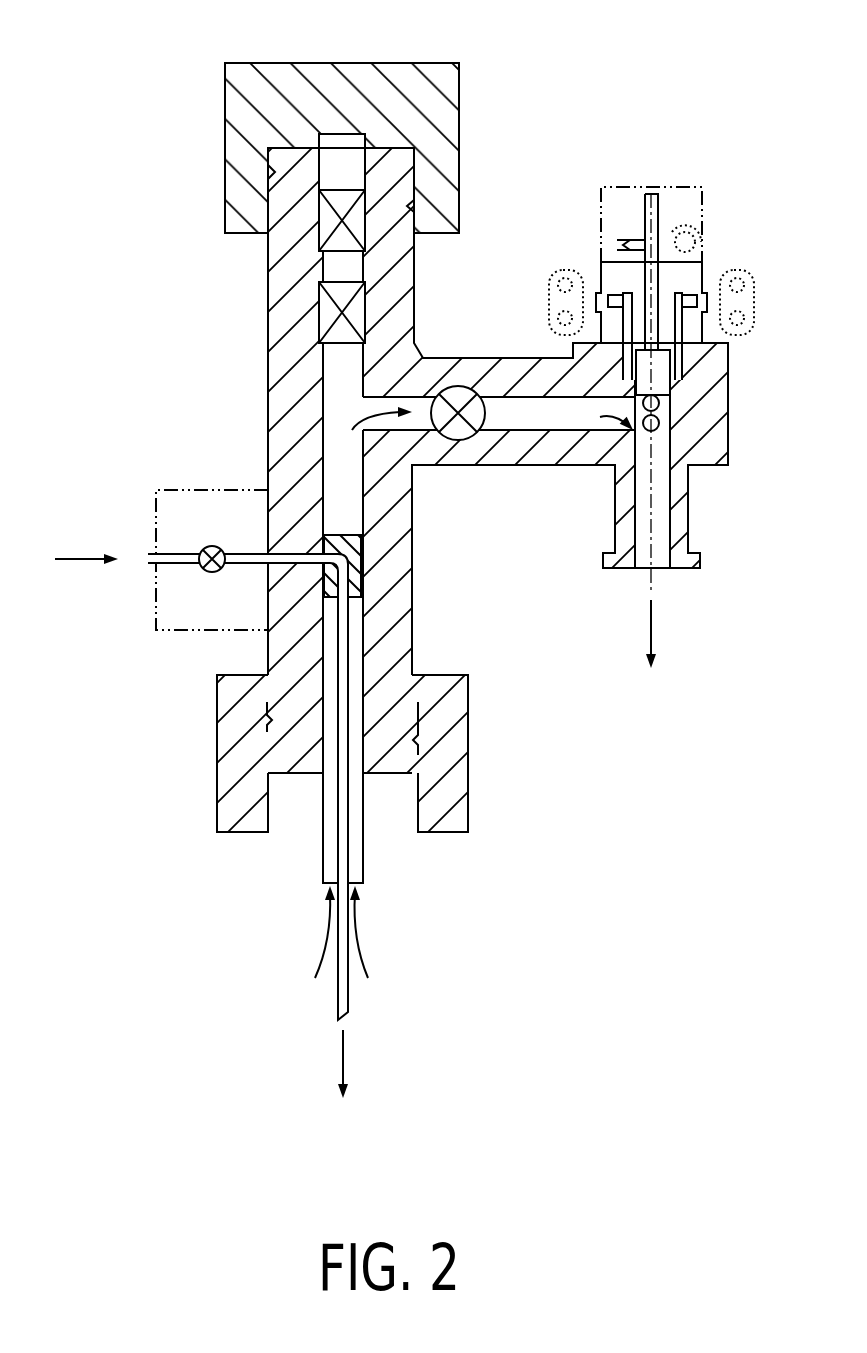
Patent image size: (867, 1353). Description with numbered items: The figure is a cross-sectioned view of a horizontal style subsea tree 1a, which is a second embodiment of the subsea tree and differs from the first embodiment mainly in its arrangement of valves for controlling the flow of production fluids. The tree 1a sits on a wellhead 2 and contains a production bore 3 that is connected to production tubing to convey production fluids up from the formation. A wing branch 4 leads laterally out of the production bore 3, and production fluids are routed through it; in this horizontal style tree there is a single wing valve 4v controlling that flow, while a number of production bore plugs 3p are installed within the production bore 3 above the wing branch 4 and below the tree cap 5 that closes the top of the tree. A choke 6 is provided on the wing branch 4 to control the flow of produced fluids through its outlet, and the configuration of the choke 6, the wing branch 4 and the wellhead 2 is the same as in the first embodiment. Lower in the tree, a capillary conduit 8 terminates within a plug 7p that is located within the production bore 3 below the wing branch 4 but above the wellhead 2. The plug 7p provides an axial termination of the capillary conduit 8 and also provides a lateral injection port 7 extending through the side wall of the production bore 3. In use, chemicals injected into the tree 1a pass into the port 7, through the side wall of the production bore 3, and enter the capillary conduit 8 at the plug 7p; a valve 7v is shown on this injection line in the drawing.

The horizontal style subsea tree 1a is at (262, 354).
The wellhead 2 is at (390, 825).
The production bore 3 is at (345, 518).
The production bore plugs 3p is at (330, 315).
The wing branch 4 is at (523, 417).
The wing valve 4v is at (458, 412).
The tree cap 5 is at (396, 77).
The choke 6 is at (708, 204).
The lateral injection port 7 is at (234, 500).
The plug 7p is at (353, 553).
The inlet valve 7v is at (212, 573).
The capillary conduit 8 is at (345, 995).